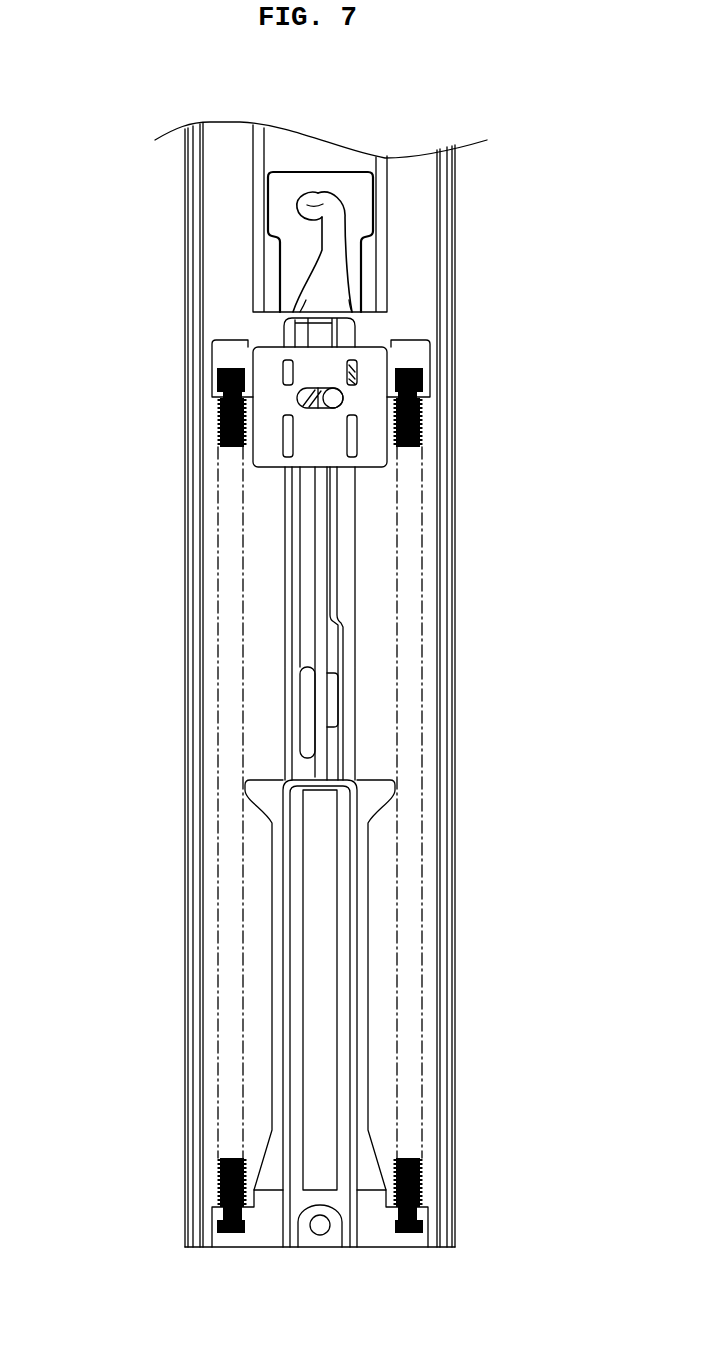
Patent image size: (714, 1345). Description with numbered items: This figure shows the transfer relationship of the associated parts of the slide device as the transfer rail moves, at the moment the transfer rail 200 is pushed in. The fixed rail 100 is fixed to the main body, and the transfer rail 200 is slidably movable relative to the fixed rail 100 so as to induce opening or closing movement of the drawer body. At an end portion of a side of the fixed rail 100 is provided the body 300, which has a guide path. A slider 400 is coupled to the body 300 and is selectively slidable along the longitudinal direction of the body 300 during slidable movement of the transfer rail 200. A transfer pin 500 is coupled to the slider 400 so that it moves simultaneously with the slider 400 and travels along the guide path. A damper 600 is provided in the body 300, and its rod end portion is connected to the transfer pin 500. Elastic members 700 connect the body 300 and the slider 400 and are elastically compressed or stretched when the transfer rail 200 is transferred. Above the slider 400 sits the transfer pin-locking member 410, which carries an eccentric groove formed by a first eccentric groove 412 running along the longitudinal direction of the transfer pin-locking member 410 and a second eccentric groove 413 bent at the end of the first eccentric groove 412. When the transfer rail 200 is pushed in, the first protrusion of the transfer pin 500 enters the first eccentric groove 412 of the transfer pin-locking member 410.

The fixed rail 100 is at (192, 223).
The transfer rail 200 is at (270, 140).
The body 300 is at (273, 1113).
The slider 400 is at (267, 377).
The transfer pin-locking member 410 is at (360, 205).
The first eccentric groove 412 is at (331, 292).
The second eccentric groove 413 is at (312, 198).
The transfer pin 500 is at (337, 395).
The damper 600 is at (317, 942).
The elastic members 700 is at (217, 1041).